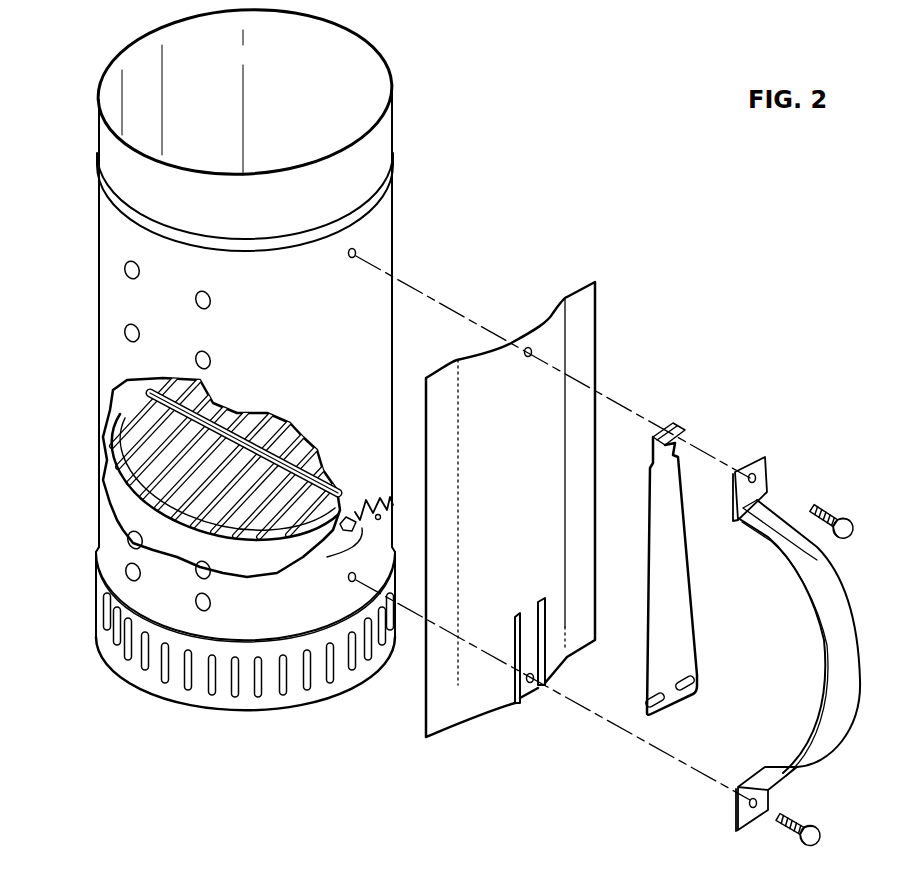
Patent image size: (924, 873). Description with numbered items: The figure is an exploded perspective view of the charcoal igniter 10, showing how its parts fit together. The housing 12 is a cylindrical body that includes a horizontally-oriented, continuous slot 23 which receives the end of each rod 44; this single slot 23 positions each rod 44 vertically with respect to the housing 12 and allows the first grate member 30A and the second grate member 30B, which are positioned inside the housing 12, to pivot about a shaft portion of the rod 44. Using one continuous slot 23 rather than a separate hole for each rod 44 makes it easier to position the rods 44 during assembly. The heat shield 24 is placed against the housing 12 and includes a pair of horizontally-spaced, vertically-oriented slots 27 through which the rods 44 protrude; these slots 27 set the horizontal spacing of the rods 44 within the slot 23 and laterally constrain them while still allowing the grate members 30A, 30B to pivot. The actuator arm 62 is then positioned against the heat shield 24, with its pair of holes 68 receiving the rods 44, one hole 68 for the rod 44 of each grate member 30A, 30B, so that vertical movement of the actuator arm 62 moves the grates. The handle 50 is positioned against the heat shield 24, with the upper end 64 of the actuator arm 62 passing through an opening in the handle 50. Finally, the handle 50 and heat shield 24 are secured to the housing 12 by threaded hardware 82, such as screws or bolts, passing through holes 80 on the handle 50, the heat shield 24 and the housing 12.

The charcoal igniter 10 is at (592, 112).
The housing 12 is at (393, 112).
The horizontally-oriented slot 23 is at (357, 505).
The heat shield 24 is at (585, 323).
The vertically-oriented slots 27 is at (517, 623).
The first grate member 30A is at (128, 512).
The second grate member 30B is at (288, 435).
The rod 44 is at (378, 520).
The handle 50 is at (833, 595).
The actuator arm 62 is at (704, 585).
The upper end 64 is at (680, 427).
The holes 68 is at (693, 697).
The holes 80 is at (356, 250).
The threaded hardware 82 is at (833, 512).